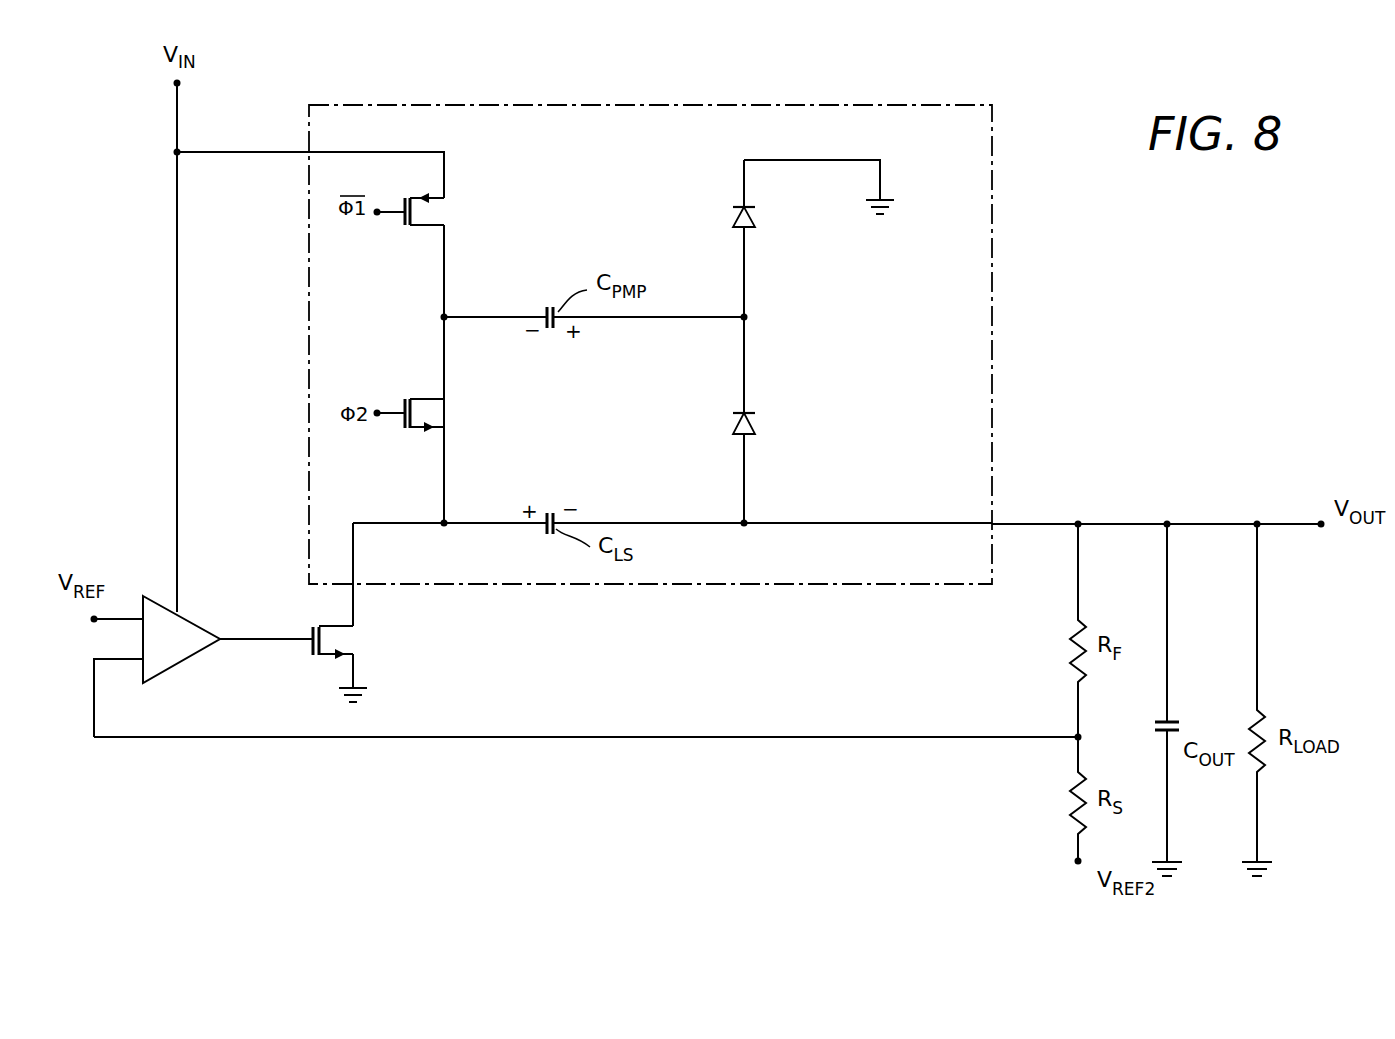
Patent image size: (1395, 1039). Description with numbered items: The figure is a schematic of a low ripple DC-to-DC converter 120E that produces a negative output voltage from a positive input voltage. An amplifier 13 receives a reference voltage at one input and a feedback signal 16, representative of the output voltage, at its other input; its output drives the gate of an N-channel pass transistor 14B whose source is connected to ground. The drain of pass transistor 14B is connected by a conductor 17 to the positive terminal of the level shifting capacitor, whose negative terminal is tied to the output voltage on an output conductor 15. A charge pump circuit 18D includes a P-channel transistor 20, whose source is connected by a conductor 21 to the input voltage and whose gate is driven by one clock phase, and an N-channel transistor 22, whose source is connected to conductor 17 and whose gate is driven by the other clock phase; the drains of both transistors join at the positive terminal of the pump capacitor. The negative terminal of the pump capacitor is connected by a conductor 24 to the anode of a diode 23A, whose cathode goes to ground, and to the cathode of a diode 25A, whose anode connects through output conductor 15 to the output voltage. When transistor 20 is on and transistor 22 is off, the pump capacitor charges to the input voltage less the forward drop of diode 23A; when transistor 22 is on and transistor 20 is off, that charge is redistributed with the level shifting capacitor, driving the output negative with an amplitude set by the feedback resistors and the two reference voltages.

The amplifier 13 is at (180, 655).
The N-channel pass transistor 14B is at (322, 639).
The output conductor 15 is at (1034, 524).
The feedback signal 16 is at (599, 737).
The conductor 17 is at (383, 523).
The charge pump circuit 18D is at (306, 259).
The P-channel transistor 20 is at (412, 212).
The conductor 21 is at (444, 317).
The N-channel transistor 22 is at (412, 413).
The diode 23A is at (755, 225).
The conductor 24 is at (746, 319).
The diode 25A is at (755, 430).
The DC-to-DC converter 120E is at (264, 786).